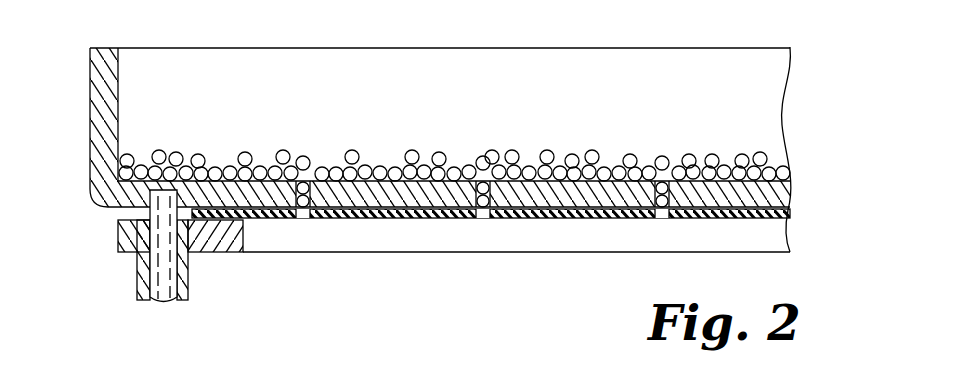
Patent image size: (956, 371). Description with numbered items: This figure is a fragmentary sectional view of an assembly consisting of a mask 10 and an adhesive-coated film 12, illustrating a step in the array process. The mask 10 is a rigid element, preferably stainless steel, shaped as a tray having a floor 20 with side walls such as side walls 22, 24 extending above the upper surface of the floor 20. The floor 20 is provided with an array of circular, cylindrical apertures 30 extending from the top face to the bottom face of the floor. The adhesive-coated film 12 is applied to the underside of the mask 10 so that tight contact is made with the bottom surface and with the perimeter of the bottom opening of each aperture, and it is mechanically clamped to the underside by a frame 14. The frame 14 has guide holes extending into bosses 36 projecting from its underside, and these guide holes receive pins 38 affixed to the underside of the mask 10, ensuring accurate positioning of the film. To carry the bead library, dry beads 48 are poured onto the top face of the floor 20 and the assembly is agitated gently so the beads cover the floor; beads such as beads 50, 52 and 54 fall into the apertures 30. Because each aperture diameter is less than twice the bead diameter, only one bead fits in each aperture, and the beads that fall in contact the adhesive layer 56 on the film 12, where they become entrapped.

The mask 10 is at (803, 100).
The adhesive-coated film 12 is at (393, 213).
The frame 14 is at (118, 240).
The floor 20 is at (780, 193).
The side wall 22 is at (303, 59).
The side wall 24 is at (118, 103).
The apertures 30 is at (303, 213).
The bosses 36 is at (188, 293).
The pins 38 is at (157, 270).
The dry beads 48 is at (426, 140).
The bead 50 is at (296, 150).
The bead 52 is at (482, 182).
The bead 54 is at (663, 182).
The adhesive layer 56 is at (484, 213).